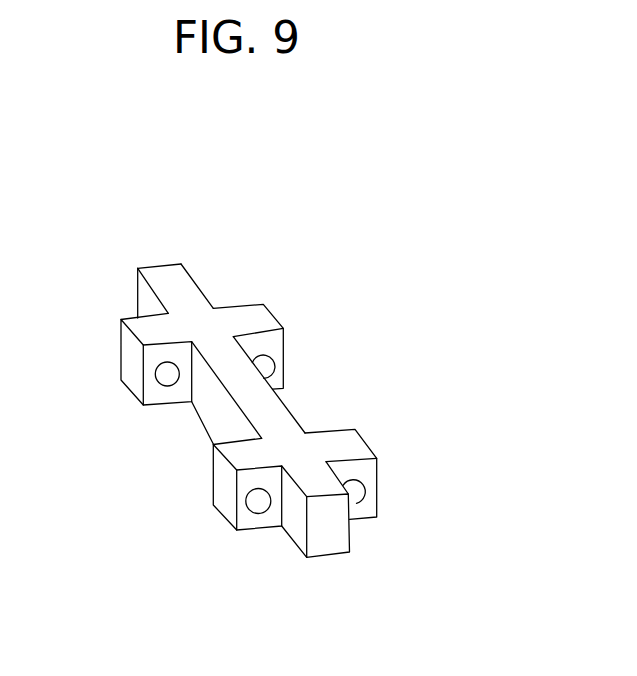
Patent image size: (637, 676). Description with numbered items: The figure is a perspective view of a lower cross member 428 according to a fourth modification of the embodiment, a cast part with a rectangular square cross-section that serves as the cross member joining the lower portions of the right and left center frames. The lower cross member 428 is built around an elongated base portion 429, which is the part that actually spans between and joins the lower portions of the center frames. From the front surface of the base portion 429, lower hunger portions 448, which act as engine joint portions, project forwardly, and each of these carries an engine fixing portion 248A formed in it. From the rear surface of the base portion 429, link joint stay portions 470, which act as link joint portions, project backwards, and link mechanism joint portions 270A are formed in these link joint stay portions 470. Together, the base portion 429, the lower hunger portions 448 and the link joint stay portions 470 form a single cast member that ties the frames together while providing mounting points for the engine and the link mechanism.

The lower cross member 428 is at (183, 249).
The base portion 429 is at (270, 413).
The lower hunger portion 448 is at (147, 325).
The link joint stay portion 470 is at (250, 313).
The engine fixing portion 248A is at (165, 386).
The link mechanism joint portion 270A is at (275, 361).